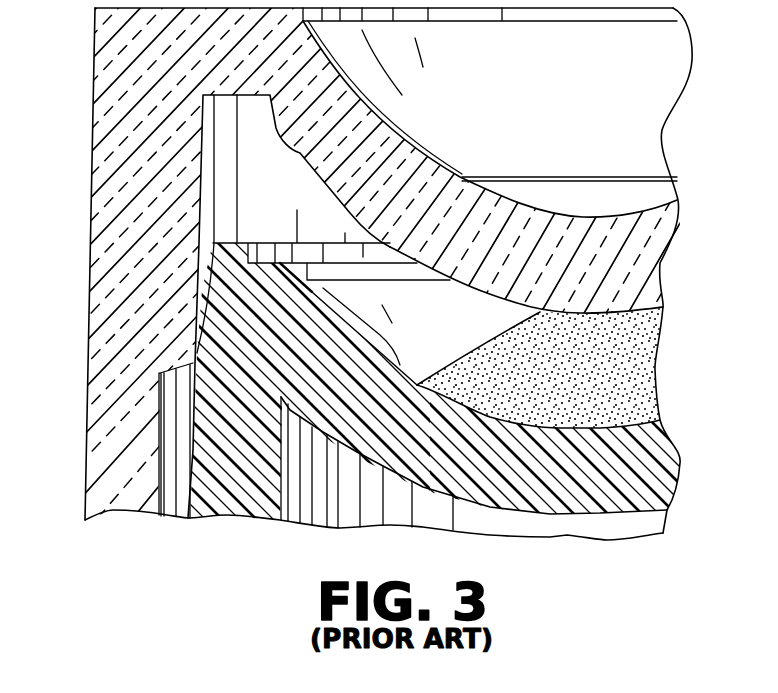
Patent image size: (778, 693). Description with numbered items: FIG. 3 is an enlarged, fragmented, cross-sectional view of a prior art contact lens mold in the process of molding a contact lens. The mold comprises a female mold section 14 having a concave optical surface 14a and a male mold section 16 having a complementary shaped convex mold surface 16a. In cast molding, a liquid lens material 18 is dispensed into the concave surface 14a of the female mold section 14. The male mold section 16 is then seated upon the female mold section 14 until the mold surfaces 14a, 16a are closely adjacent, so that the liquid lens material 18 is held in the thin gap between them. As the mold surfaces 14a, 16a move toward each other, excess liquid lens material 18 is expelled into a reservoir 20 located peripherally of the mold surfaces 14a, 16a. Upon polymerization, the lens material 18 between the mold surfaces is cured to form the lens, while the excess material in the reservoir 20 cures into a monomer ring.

The female mold section 14 is at (250, 497).
The concave optical surface 14a is at (405, 372).
The male mold section 16 is at (97, 239).
The convex mold surface 16a is at (488, 296).
The liquid lens material 18 is at (640, 367).
The reservoir 20 is at (268, 263).